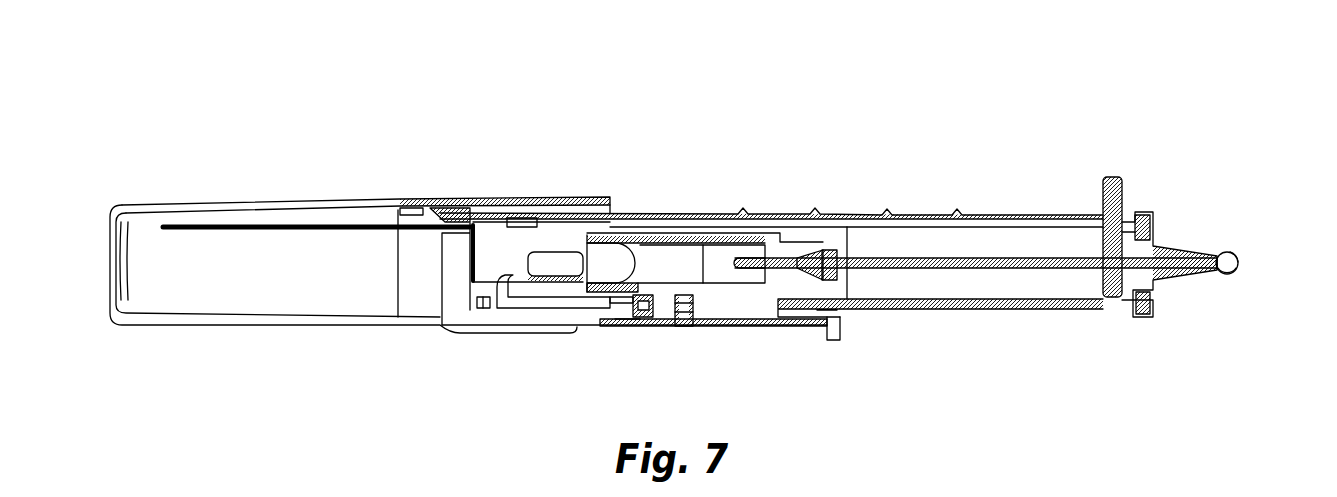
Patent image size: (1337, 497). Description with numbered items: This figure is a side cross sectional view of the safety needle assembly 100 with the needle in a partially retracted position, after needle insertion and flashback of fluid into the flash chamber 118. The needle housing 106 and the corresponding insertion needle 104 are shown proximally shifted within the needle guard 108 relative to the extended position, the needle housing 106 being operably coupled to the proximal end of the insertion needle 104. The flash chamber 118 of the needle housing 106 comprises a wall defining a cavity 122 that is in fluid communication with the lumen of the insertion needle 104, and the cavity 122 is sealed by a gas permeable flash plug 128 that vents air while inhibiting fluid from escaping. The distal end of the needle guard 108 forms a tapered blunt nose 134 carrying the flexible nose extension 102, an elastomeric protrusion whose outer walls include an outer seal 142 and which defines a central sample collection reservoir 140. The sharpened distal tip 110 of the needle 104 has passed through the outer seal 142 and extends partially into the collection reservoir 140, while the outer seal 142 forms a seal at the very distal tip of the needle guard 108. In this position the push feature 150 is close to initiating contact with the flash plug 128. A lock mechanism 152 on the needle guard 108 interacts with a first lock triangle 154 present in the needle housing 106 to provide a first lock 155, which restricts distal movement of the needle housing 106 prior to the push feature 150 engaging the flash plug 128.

The safety needle assembly 100 is at (1160, 68).
The flexible nose extension 102 is at (1223, 250).
The insertion needle 104 is at (1053, 260).
The needle housing 106 is at (733, 240).
The needle guard 108 is at (835, 212).
The sharpened distal tip 110 is at (1227, 277).
The flash chamber 118 is at (707, 283).
The cavity 122 is at (662, 262).
The flash plug 128 is at (615, 255).
The nose 134 is at (1177, 243).
The sample collection reservoir 140 is at (1225, 273).
The outer seal 142 is at (1240, 258).
The push feature 150 is at (543, 257).
The lock mechanism 152 is at (642, 317).
The first lock triangle 154 is at (633, 300).
The first lock 155 is at (628, 325).